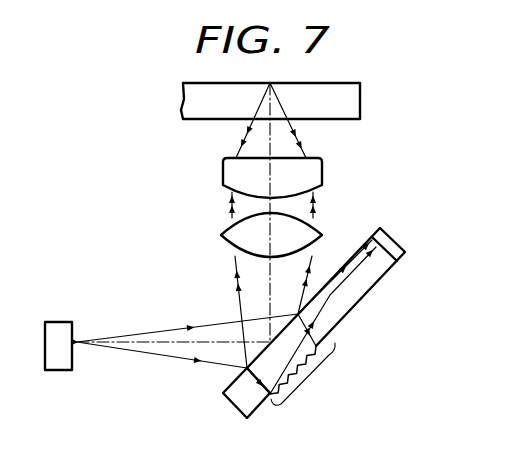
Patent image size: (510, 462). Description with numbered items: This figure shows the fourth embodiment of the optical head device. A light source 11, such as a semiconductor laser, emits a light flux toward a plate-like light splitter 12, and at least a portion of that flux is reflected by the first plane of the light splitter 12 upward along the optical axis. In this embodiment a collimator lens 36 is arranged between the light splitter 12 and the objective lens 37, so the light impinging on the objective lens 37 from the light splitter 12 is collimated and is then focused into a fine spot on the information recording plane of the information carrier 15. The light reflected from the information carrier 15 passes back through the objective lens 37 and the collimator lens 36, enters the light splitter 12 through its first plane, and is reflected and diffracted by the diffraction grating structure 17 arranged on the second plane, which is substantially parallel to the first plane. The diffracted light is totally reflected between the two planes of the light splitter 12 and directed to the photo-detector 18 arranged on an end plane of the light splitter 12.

The light source 11 is at (57, 321).
The plate-like light splitter 12 is at (231, 389).
The information carrier 15 is at (352, 92).
The diffraction grating structure 17 is at (307, 376).
The photo-detector 18 is at (398, 238).
The collimator lens 36 is at (221, 236).
The objective lens 37 is at (222, 172).